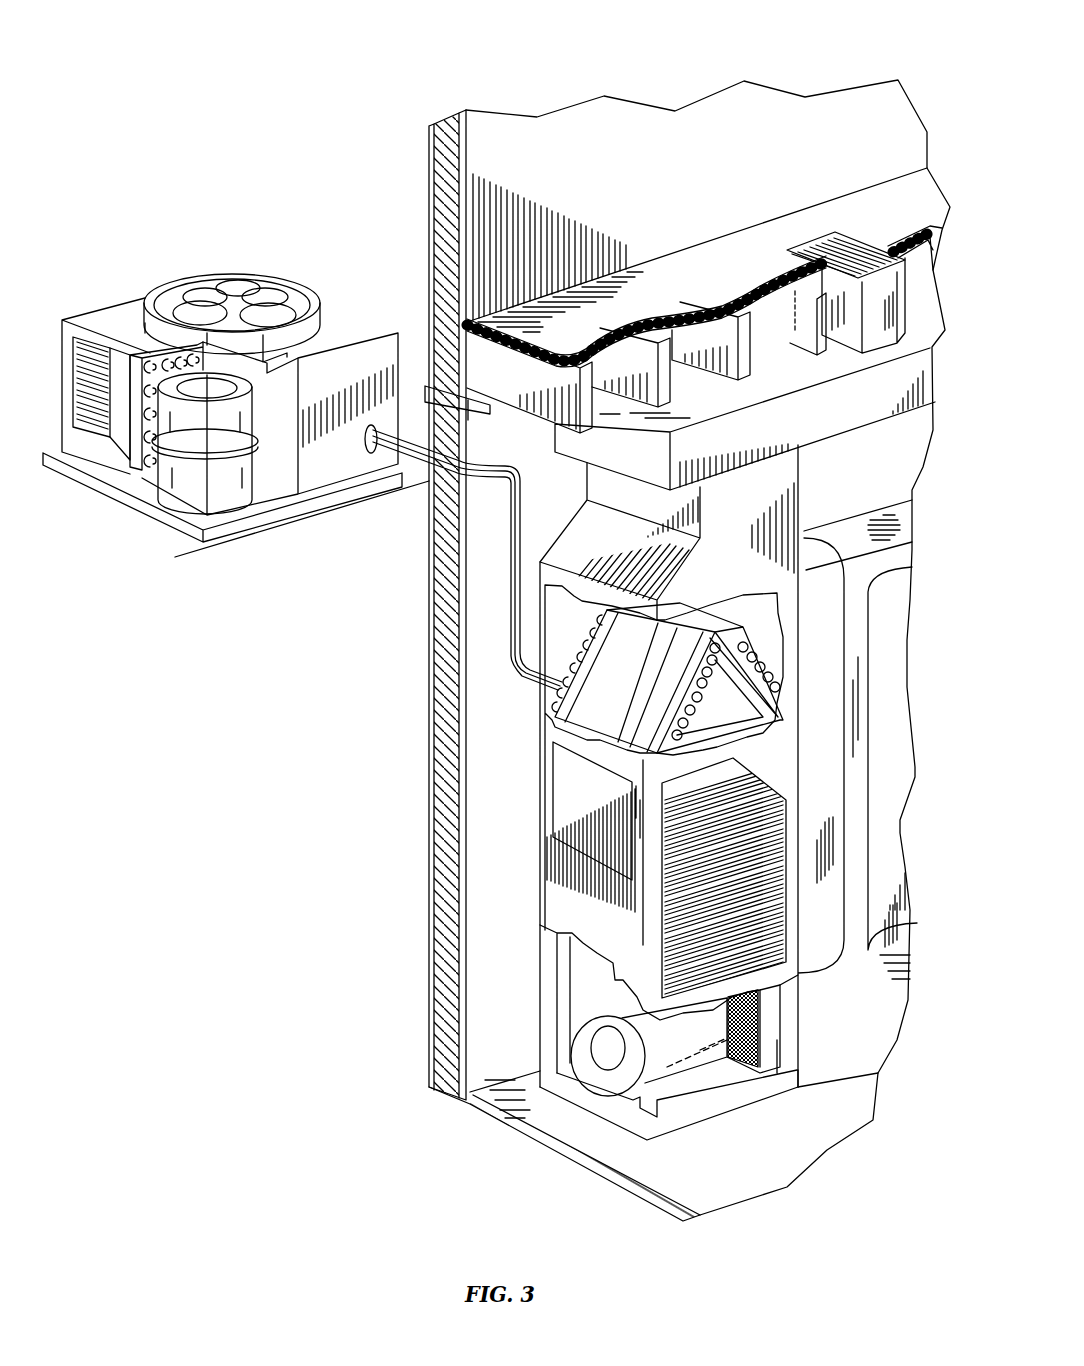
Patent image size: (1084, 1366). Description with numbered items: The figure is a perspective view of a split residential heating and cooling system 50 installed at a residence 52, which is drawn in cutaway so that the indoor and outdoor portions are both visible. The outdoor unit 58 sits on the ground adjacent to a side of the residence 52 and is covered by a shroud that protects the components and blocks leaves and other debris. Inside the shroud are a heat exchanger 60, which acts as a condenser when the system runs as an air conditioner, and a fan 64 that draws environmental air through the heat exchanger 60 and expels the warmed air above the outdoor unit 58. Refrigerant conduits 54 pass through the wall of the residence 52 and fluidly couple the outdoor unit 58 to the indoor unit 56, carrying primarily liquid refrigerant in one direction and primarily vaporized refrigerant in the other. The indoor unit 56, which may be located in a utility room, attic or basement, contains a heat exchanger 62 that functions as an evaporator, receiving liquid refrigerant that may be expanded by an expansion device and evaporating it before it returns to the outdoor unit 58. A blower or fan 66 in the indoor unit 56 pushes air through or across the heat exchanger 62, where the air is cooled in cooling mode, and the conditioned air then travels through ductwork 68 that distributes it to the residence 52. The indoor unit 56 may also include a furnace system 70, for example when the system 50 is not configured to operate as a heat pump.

The residential heating and cooling system 50 is at (349, 57).
The residence 52 is at (594, 119).
The refrigerant conduits 54 is at (504, 537).
The indoor unit 56 is at (524, 847).
The outdoor unit 58 is at (176, 264).
The heat exchanger 60 is at (155, 360).
The heat exchanger 62 is at (614, 708).
The fan 64 is at (265, 285).
The blower or fan 66 is at (597, 1075).
The ductwork 68 is at (913, 374).
The furnace system 70 is at (548, 785).